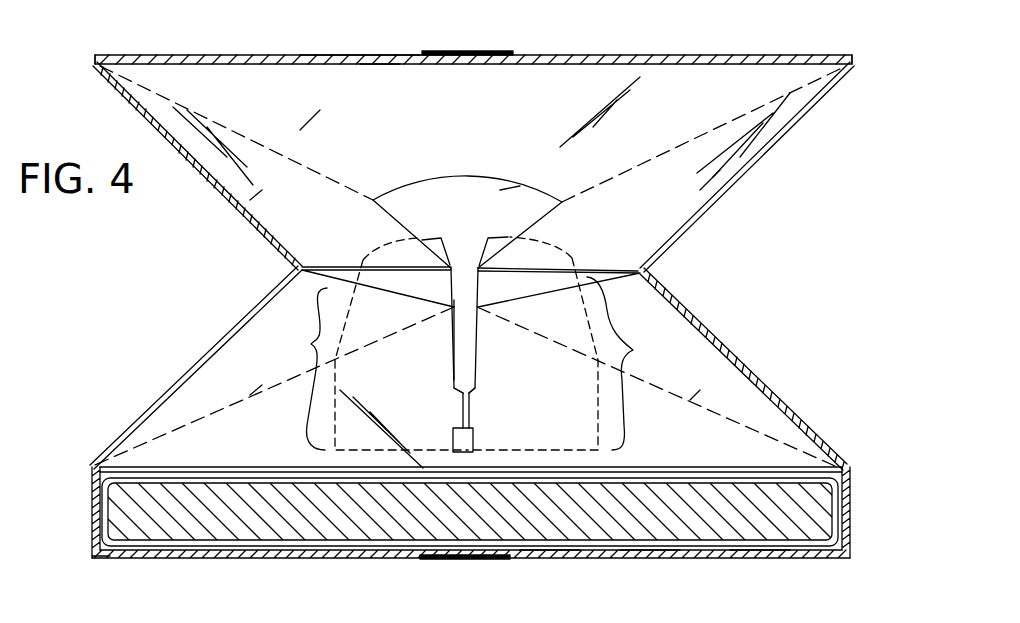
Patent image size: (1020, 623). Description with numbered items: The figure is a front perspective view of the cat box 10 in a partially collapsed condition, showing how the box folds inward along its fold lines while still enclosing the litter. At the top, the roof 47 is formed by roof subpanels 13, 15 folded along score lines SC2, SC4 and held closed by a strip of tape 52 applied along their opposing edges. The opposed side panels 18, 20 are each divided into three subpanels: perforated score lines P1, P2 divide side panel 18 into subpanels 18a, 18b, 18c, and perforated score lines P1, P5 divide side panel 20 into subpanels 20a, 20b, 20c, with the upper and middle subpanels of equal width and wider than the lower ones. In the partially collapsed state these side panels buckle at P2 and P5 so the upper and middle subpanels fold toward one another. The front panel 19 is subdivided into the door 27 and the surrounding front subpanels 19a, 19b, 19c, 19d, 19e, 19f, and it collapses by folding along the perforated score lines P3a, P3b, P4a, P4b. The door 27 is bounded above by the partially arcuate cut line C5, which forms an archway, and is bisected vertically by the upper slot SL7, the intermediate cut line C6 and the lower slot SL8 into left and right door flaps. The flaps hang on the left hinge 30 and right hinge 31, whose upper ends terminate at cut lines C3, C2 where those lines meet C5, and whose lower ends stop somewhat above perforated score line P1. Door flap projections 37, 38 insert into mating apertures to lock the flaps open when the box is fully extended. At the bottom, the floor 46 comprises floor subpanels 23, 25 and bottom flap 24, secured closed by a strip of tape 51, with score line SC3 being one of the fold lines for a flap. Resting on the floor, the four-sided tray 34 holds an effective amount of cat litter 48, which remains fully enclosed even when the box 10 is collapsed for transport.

The cat box 10 is at (120, 128).
The roof subpanel 13 is at (685, 54).
The roof subpanel 15 is at (305, 54).
The roof 47 is at (382, 55).
The strip of tape 52 is at (500, 51).
The score line SC4 is at (95, 56).
The score line SC2 is at (850, 58).
The side panel 18 is at (163, 318).
The subpanel 18a is at (230, 205).
The subpanel 18b is at (225, 333).
The subpanel 18c is at (90, 515).
The side panel 20 is at (767, 333).
The subpanel 20a is at (720, 200).
The subpanel 20b is at (722, 341).
The subpanel 20c is at (852, 525).
The perforated score line P2 is at (290, 268).
The perforated score line P5 is at (645, 272).
The door 27 is at (430, 200).
The front panel 19 is at (485, 118).
The front subpanel 19a is at (676, 210).
The front subpanel 19b is at (393, 118).
The front subpanel 19c is at (309, 208).
The front subpanel 19d is at (263, 385).
The front subpanel 19e is at (260, 455).
The front subpanel 19f is at (712, 390).
The cut line C5 is at (522, 182).
The cut line C3 is at (343, 265).
The cut line C2 is at (604, 268).
The perforated score line P3a is at (238, 130).
The perforated score line P4a is at (650, 160).
The perforated score line P4b is at (205, 415).
The perforated score line P3b is at (735, 420).
The left hinge 30 is at (312, 344).
The right hinge 31 is at (633, 350).
The upper slot SL7 is at (465, 360).
The intermediate cut line C6 is at (455, 400).
The door flap projection 37 is at (475, 410).
The door flap projection 38 is at (455, 420).
The lower slot SL8 is at (465, 440).
The perforated score line P1 is at (90, 465).
The tray 34 is at (160, 540).
The cat litter 48 is at (425, 525).
The floor subpanel 23 is at (265, 555).
The bottom flap 24 is at (545, 558).
The floor subpanel 25 is at (640, 558).
The floor 46 is at (755, 560).
The strip of tape 51 is at (478, 560).
The score line SC3 is at (79, 589).